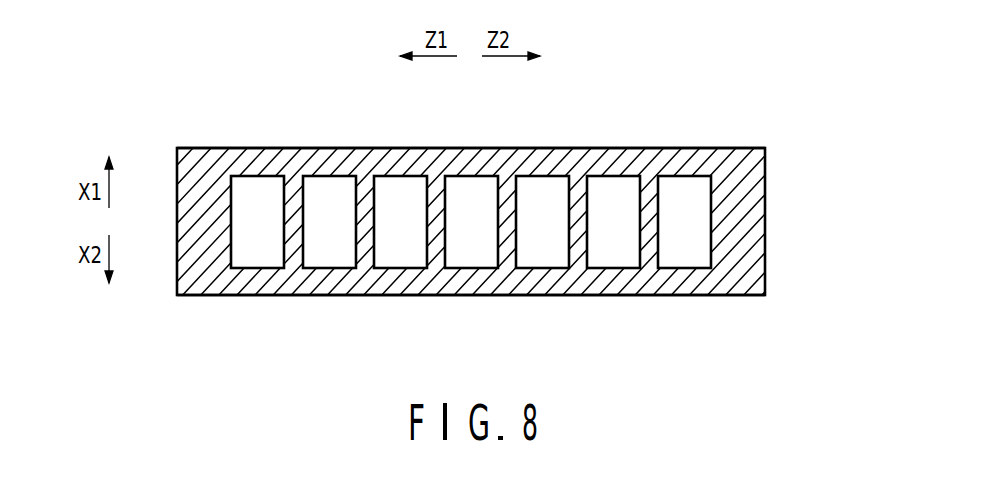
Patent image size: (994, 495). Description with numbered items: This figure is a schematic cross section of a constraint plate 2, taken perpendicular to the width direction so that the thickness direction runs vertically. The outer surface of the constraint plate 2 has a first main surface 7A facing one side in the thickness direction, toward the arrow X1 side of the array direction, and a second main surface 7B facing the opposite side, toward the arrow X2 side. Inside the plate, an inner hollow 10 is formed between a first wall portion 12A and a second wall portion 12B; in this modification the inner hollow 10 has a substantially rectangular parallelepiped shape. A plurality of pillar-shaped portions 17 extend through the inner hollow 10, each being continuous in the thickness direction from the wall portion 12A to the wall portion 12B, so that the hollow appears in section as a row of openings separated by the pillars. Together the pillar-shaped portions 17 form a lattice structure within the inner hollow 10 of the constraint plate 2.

The constraint plate 2 is at (765, 70).
The first main surface 7A is at (578, 148).
The second main surface 7B is at (668, 295).
The inner hollow 10 is at (400, 249).
The first wall portion 12A is at (470, 148).
The second wall portion 12B is at (542, 280).
The pillar-shaped portion 17 is at (362, 250).